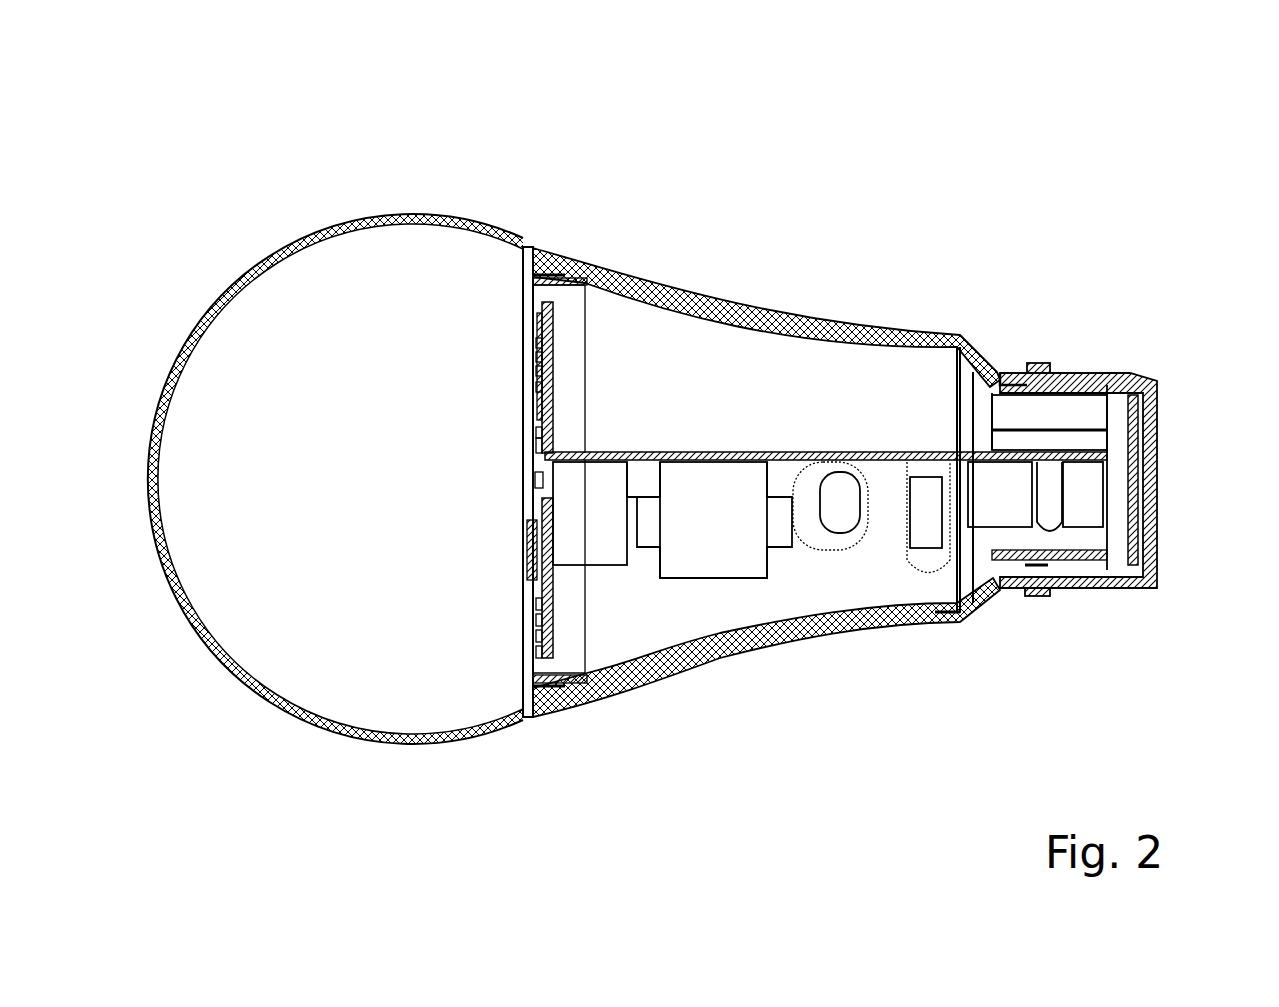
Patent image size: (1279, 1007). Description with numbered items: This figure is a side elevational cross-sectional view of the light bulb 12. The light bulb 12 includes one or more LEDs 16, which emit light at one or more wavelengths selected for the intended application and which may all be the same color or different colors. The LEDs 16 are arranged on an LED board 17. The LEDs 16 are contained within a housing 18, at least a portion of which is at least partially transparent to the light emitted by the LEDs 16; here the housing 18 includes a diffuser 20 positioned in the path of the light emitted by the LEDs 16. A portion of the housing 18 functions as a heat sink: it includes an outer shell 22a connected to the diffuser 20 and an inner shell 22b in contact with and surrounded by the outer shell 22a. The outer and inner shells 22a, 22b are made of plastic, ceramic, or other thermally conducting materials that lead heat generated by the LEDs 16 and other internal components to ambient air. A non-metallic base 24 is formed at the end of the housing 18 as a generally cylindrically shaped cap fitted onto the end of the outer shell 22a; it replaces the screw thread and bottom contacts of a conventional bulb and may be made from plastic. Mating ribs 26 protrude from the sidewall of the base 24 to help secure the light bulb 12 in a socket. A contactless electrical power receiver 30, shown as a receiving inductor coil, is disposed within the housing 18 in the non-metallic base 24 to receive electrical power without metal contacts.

The light bulb 12 is at (897, 104).
The LEDs 16 is at (537, 322).
The LED board 17 is at (557, 383).
The housing 18 is at (559, 249).
The diffuser 20 is at (300, 230).
The outer shell 22a is at (690, 298).
The inner shell 22b is at (840, 612).
The non-metallic base 24 is at (1090, 372).
The mating ribs 26 is at (1038, 362).
The contactless electrical power receiver 30 is at (1135, 455).